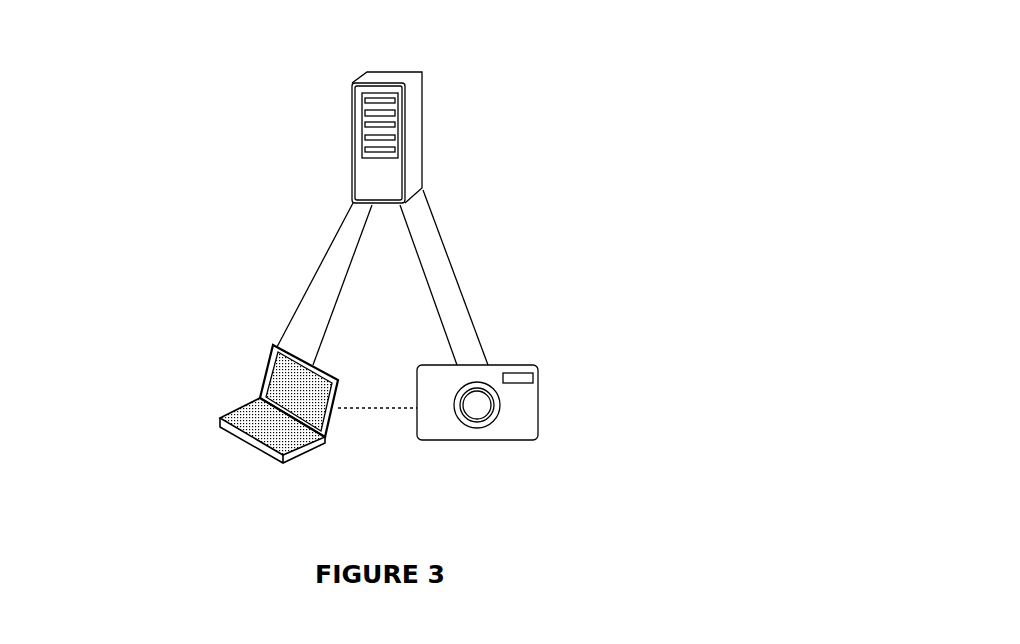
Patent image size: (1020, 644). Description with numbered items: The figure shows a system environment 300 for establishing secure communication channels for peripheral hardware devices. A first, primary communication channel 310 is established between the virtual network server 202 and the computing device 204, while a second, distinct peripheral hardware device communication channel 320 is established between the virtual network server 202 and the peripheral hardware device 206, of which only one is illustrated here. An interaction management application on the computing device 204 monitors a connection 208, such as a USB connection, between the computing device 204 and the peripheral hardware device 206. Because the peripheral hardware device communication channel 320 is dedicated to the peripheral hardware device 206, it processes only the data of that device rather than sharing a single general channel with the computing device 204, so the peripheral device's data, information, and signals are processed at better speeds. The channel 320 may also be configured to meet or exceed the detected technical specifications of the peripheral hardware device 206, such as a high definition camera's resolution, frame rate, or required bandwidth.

The system environment 300 is at (647, 73).
The virtual network server 202 is at (350, 137).
The computing device 204 is at (258, 383).
The peripheral hardware device 206 is at (541, 388).
The connection 208 is at (370, 408).
The primary communication channel 310 is at (332, 260).
The peripheral hardware device communication channel 320 is at (440, 268).